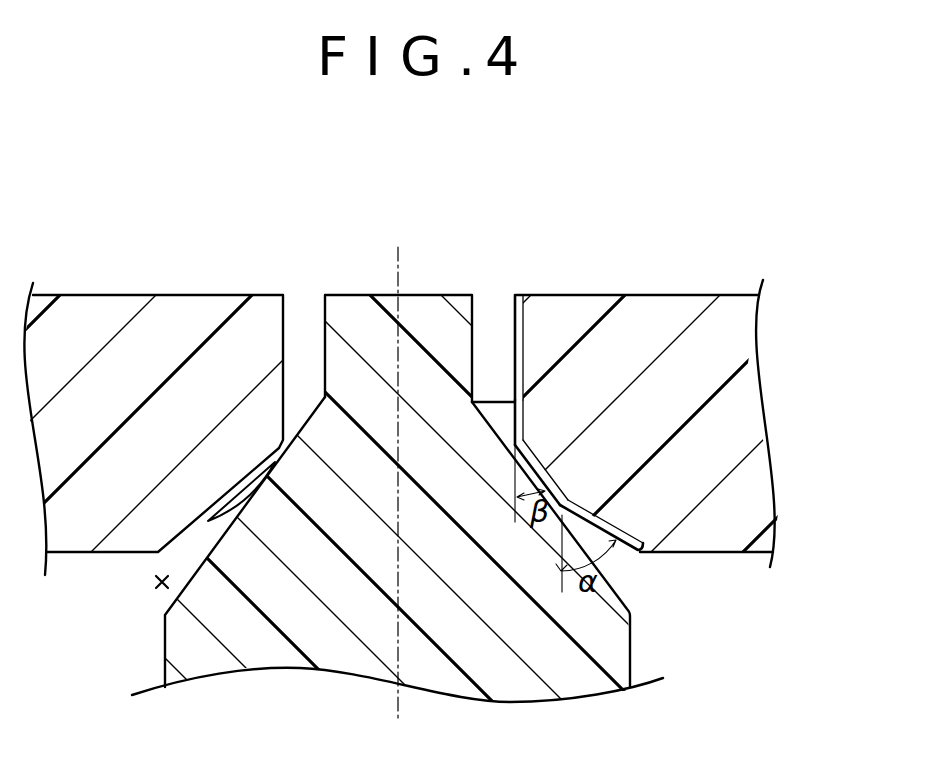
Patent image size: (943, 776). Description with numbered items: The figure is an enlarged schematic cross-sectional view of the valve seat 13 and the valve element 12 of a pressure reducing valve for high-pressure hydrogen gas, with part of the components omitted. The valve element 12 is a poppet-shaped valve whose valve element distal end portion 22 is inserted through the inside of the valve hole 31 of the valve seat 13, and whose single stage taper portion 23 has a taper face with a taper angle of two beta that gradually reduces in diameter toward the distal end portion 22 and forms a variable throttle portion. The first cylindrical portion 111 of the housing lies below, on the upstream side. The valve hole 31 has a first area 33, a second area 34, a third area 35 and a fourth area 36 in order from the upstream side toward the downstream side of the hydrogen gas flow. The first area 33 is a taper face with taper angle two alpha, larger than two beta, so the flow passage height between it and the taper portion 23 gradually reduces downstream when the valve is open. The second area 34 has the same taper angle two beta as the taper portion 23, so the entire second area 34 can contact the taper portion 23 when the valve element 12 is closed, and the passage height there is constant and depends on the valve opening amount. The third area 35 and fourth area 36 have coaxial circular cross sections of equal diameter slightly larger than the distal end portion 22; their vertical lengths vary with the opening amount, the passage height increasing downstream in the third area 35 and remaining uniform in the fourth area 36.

The valve element 12 is at (630, 645).
The valve seat 13 is at (204, 303).
The valve element distal end portion 22 is at (417, 303).
The single stage taper portion 23 is at (488, 432).
The valve hole 31 is at (557, 401).
The first area 33 is at (600, 529).
The second area 34 is at (542, 474).
The third area 35 is at (525, 402).
The fourth area 36 is at (525, 300).
The first cylindrical portion 111 is at (155, 586).